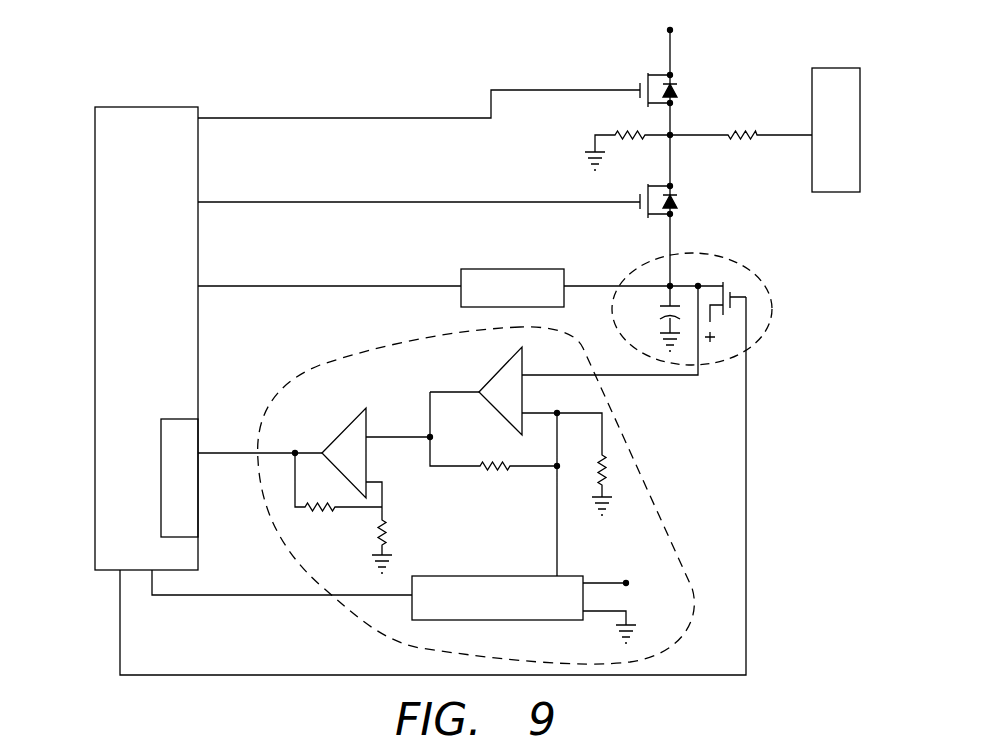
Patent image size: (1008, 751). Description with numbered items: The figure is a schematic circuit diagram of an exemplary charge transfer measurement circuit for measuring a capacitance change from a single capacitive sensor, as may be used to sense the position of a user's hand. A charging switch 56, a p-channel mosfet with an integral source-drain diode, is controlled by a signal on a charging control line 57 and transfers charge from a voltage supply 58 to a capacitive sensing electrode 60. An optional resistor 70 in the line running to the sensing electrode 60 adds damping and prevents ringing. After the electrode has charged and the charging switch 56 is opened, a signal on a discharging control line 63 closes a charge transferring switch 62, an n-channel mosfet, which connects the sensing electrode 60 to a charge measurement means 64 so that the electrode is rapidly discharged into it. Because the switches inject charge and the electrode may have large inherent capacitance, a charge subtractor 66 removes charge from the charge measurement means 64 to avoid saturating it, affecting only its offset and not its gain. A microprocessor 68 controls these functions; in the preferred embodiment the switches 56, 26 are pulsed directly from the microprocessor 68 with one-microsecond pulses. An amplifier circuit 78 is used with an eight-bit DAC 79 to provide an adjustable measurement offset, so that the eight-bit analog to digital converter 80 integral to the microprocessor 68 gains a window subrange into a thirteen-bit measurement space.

The switch 26 is at (784, 494).
The charging switch 56 is at (620, 60).
The charging control line 57 is at (432, 118).
The voltage supply 58 is at (672, 30).
The capacitive sensing electrode 60 is at (840, 192).
The charge transferring switch 62 is at (695, 196).
The discharging control line 63 is at (503, 202).
The charge measurement means 64 is at (772, 322).
The charge subtractor 66 is at (492, 272).
The microprocessor 68 is at (166, 299).
The resistor 70 is at (738, 133).
The amplifier circuit 78 is at (355, 362).
The DAC 79 is at (503, 576).
The analog to digital converter 80 is at (175, 500).